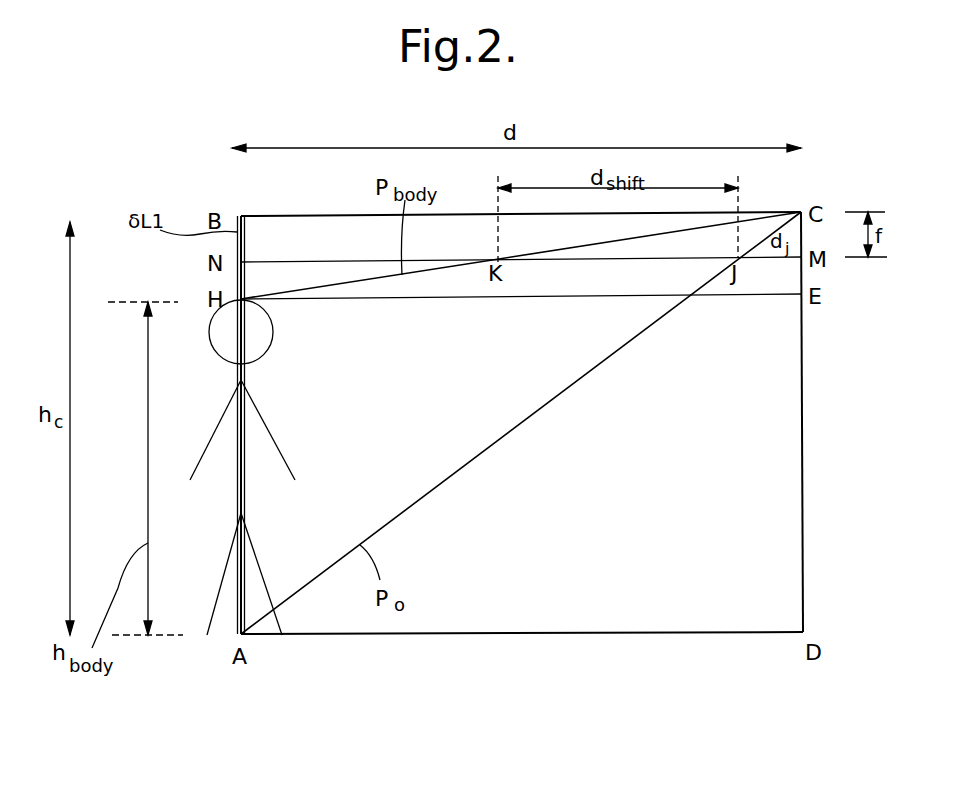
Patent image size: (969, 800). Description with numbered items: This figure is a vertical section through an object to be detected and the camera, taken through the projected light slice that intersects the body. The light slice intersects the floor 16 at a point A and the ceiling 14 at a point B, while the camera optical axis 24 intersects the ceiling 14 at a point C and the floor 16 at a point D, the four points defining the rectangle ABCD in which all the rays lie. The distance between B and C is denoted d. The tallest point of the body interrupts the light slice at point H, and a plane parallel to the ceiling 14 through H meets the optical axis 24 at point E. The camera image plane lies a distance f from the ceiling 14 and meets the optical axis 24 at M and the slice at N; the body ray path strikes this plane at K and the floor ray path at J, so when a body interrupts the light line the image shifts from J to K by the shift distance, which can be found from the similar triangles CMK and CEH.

The ceiling 14 is at (316, 208).
The floor 16 is at (595, 642).
The camera optical axis 24 is at (803, 400).